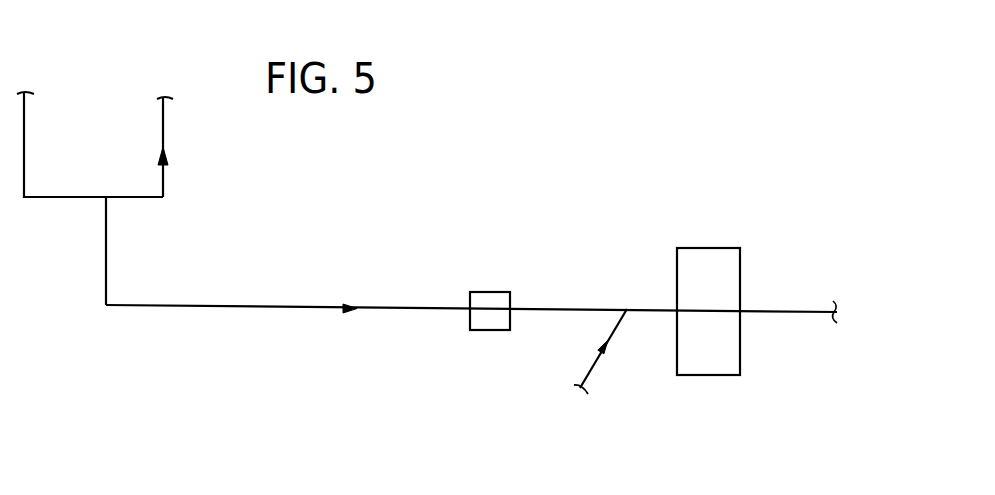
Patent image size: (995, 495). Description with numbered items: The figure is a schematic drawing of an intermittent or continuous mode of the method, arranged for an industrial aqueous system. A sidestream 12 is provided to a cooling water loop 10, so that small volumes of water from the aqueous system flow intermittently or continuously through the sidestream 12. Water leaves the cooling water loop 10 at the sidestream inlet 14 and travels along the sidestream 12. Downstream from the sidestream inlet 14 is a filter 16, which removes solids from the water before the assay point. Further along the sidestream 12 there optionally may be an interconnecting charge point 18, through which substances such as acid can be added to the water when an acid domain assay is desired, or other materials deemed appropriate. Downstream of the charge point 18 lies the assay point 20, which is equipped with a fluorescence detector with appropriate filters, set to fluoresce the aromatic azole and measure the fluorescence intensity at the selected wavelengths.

The cooling water loop 10 is at (164, 178).
The sidestream 12 is at (389, 310).
The sidestream inlet 14 is at (95, 209).
The filter 16 is at (484, 330).
The interconnecting charge point 18 is at (628, 317).
The assay point 20 is at (717, 375).